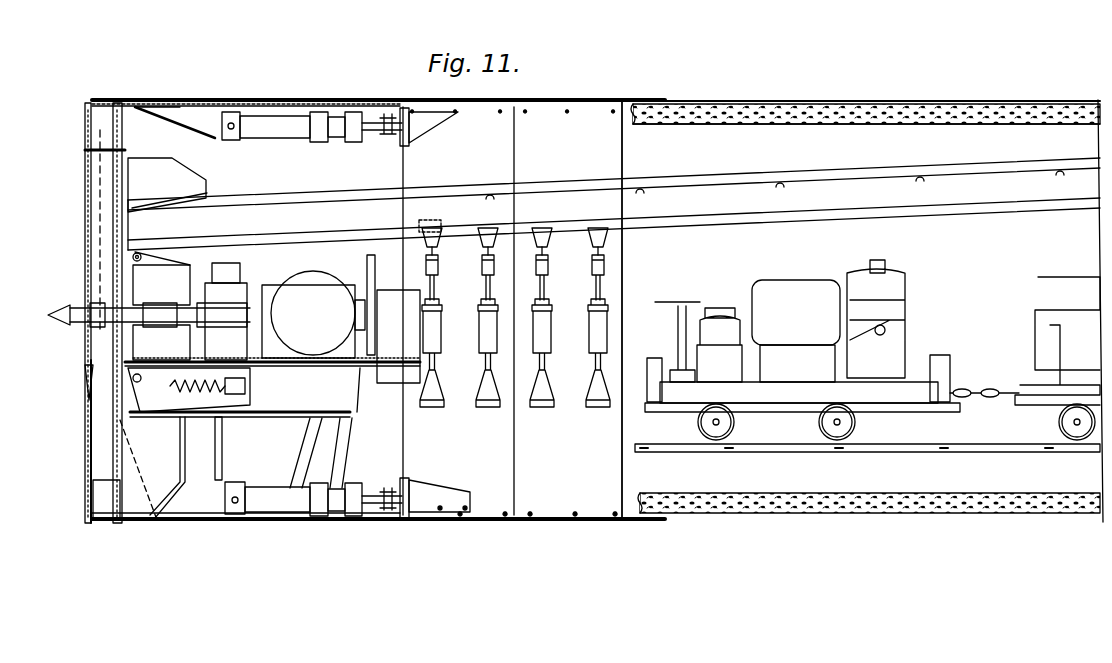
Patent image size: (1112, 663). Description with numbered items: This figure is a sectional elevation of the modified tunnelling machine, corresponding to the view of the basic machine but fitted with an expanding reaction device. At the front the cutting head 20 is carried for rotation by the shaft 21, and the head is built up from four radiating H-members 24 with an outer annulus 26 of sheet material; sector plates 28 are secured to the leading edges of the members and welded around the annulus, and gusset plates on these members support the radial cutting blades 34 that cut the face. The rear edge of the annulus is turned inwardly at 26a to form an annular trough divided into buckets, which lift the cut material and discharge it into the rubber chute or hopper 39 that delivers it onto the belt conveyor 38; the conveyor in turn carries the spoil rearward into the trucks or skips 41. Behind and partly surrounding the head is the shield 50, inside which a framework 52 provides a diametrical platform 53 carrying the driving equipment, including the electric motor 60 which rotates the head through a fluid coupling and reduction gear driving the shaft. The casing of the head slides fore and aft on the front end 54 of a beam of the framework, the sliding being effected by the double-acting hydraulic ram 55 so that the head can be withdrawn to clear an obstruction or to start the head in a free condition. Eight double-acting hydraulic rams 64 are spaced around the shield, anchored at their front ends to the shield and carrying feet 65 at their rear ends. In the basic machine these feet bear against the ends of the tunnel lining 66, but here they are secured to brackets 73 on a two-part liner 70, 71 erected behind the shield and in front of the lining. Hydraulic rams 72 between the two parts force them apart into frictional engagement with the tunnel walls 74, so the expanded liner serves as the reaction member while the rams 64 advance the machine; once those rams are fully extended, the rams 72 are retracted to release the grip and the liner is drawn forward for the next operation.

The cutting head 20 is at (86, 268).
The shaft 21 is at (157, 304).
The H-members 24 is at (96, 201).
The outer annulus 26 is at (94, 520).
The inwardly turned edge of the annulus 26a is at (178, 482).
The sector plates 28 is at (88, 440).
The radial cutting blades 34 is at (87, 378).
The belt conveyor 38 is at (460, 190).
The rubber chute or hopper 39 is at (205, 186).
The trucks or skips 41 is at (1037, 279).
The shield 50 is at (166, 99).
The framework 52 is at (282, 418).
The diametrical platform 53 is at (186, 356).
The front end of beam 54 is at (176, 416).
The double-acting hydraulic ram 55 is at (196, 386).
The electric motor 60 is at (326, 290).
The double-acting hydraulic rams 64 is at (289, 140).
The feet 65 is at (382, 142).
The tunnel lining 66 is at (718, 498).
The first part of two-part liner 70 is at (612, 162).
The second part of two-part liner 71 is at (612, 478).
The hydraulic rams 72 is at (588, 345).
The brackets 73 is at (438, 493).
The tunnel walls 74 is at (677, 86).